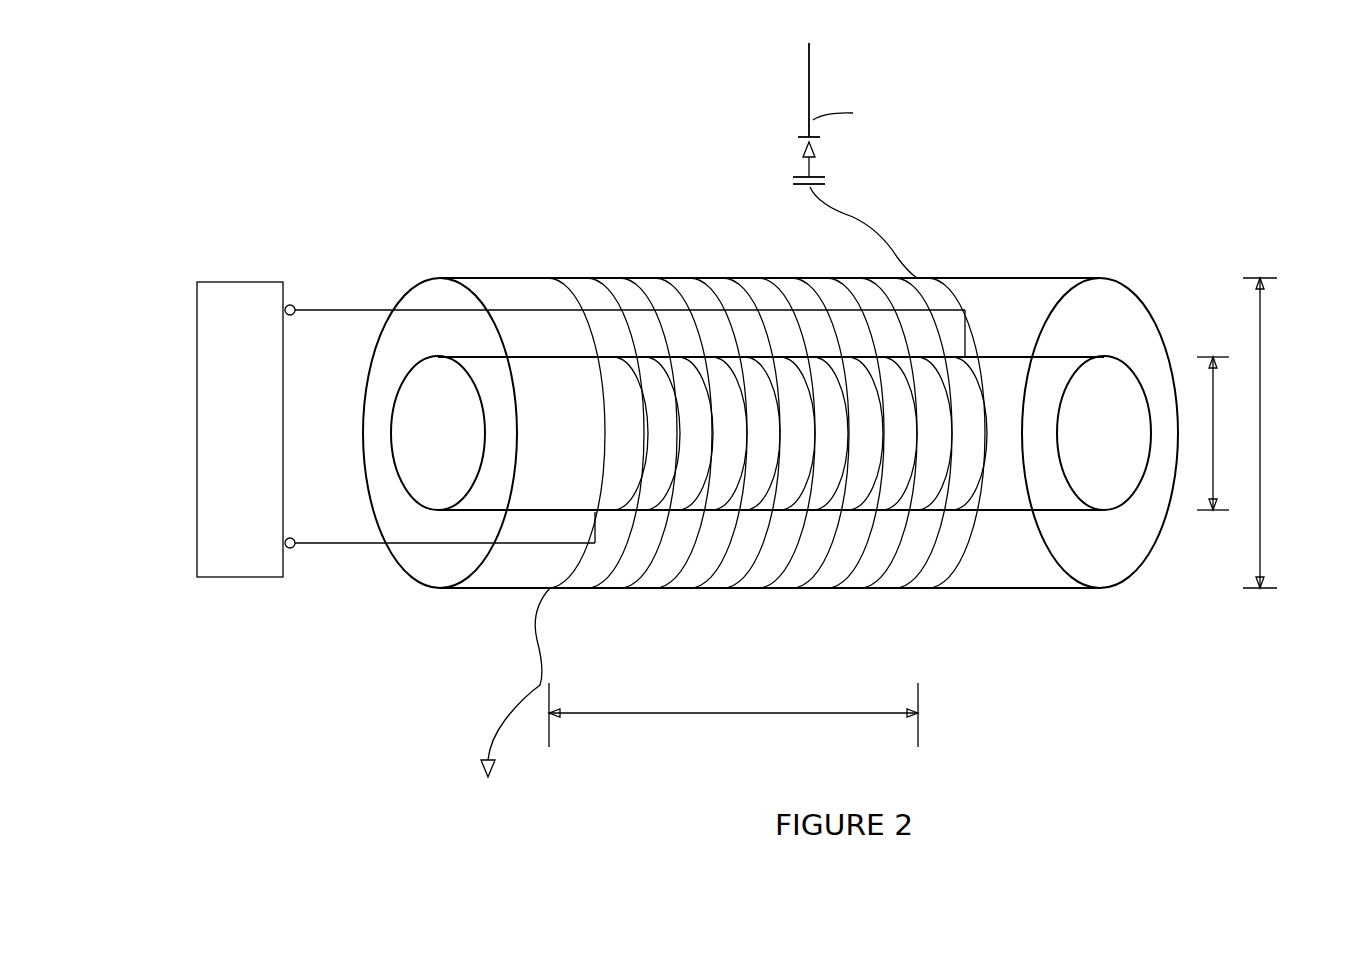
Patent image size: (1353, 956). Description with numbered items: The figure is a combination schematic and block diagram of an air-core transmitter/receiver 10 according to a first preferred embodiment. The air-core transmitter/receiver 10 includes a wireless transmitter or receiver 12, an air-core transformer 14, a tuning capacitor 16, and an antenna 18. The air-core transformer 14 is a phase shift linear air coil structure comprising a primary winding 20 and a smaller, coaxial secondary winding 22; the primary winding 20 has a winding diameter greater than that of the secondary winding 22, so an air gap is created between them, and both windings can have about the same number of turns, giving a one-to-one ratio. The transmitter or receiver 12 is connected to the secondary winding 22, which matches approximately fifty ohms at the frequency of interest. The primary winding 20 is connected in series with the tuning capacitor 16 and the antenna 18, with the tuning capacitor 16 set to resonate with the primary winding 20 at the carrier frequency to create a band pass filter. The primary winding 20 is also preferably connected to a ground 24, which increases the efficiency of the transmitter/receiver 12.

The air-core transmitter/receiver 10 is at (448, 158).
The wireless transmitter or receiver 12 is at (243, 277).
The air-core transformer 14 is at (1150, 295).
The tuning capacitor (Ceq1) 16 is at (792, 180).
The antenna 18 is at (816, 93).
The primary winding 20 is at (717, 277).
The secondary winding 22 is at (980, 350).
The ground 24 is at (480, 697).